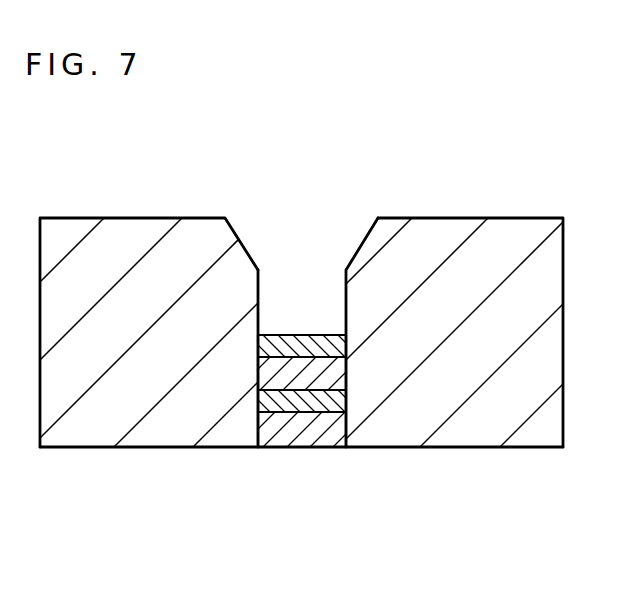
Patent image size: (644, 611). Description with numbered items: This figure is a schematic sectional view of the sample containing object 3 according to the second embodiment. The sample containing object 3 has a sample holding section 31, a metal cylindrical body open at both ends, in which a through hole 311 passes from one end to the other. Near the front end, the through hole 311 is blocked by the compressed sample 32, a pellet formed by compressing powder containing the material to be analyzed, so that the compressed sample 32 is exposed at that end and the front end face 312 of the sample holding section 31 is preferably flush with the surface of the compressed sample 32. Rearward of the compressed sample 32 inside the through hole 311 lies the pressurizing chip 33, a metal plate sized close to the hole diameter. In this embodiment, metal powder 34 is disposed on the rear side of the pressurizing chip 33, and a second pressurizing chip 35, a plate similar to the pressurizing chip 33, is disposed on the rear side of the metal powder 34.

The sample containing object 3 is at (533, 182).
The sample holding section 31 is at (462, 433).
The through hole 311 is at (346, 300).
The end face 312 is at (133, 448).
The compressed sample 32 is at (283, 433).
The pressurizing chip 33 is at (328, 403).
The metal powder 34 is at (337, 370).
The second pressurizing chip 35 is at (260, 346).